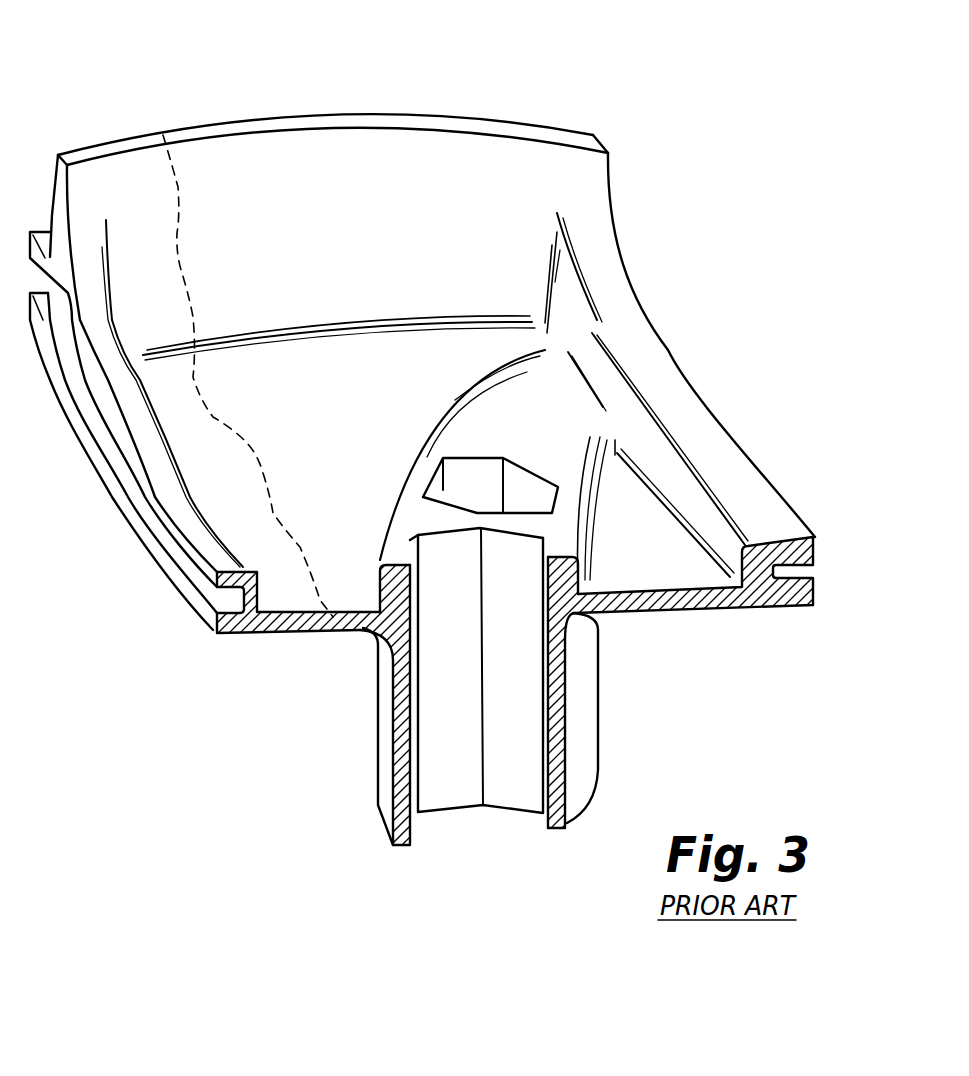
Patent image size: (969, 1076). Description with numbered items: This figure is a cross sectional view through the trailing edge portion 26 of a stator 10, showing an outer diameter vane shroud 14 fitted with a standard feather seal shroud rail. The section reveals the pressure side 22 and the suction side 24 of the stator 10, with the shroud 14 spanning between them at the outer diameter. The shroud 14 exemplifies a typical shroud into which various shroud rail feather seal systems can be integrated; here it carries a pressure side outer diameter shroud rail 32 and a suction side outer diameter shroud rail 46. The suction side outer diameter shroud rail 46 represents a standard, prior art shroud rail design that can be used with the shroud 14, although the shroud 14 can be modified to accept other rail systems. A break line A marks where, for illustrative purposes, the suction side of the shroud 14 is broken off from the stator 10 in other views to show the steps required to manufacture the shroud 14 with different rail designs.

The stator 10 is at (560, 110).
The trailing edge portion 26 is at (276, 100).
The break line A is at (163, 130).
The suction side outer diameter shroud rail 46 is at (198, 630).
The pressure side outer diameter shroud rail 32 is at (793, 613).
The shroud 14 is at (360, 575).
The suction side 24 is at (357, 778).
The pressure side 22 is at (758, 735).